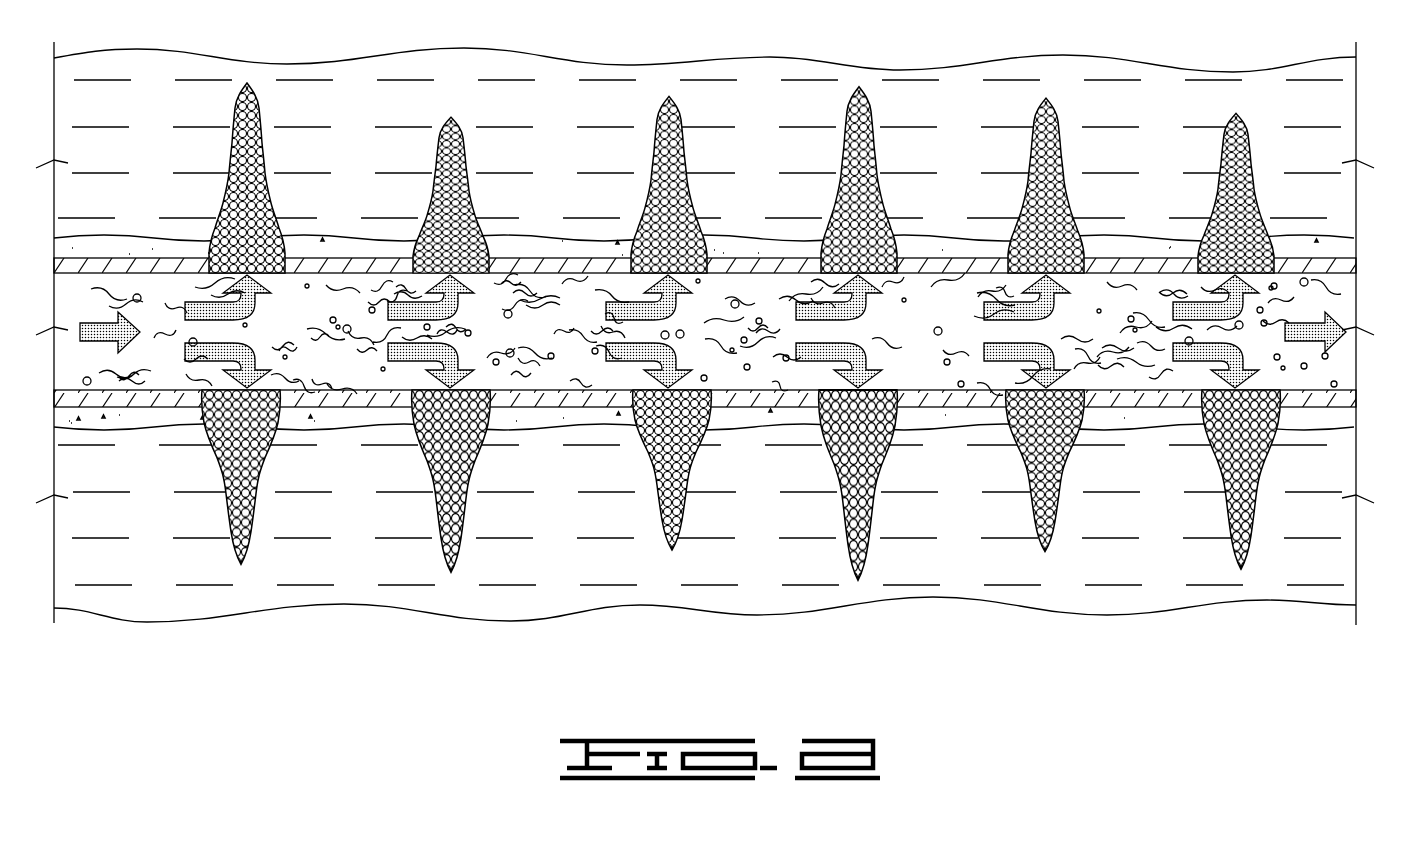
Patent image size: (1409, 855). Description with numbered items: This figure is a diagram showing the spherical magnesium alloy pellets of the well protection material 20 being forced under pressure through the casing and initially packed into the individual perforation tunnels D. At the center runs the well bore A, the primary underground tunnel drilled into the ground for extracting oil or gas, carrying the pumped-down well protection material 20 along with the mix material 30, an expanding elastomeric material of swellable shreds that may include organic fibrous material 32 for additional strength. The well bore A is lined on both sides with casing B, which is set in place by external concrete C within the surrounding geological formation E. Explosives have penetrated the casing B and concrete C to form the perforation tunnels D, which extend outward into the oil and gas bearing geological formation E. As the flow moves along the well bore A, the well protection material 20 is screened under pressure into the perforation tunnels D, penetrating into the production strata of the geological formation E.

The well protection material 20 is at (263, 163).
The mix material 30 is at (567, 273).
The organic fibrous material 32 is at (137, 290).
The well bore A is at (1338, 283).
The casing B is at (112, 267).
The concrete C is at (363, 248).
The perforation tunnels D is at (470, 205).
The geological formation E is at (721, 332).